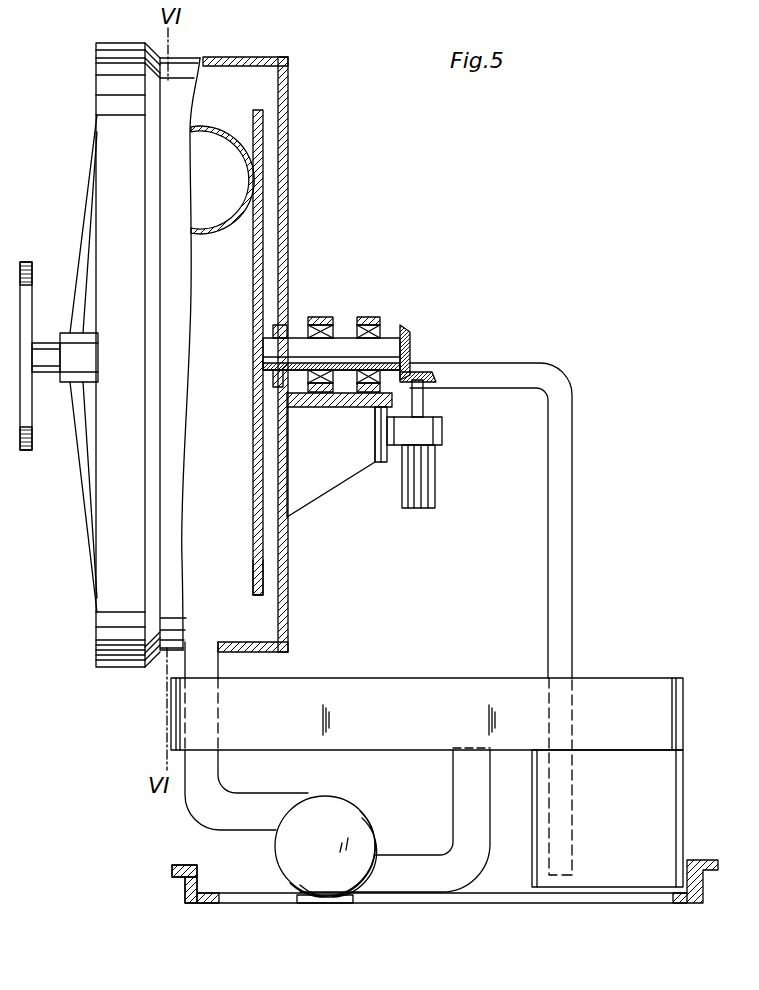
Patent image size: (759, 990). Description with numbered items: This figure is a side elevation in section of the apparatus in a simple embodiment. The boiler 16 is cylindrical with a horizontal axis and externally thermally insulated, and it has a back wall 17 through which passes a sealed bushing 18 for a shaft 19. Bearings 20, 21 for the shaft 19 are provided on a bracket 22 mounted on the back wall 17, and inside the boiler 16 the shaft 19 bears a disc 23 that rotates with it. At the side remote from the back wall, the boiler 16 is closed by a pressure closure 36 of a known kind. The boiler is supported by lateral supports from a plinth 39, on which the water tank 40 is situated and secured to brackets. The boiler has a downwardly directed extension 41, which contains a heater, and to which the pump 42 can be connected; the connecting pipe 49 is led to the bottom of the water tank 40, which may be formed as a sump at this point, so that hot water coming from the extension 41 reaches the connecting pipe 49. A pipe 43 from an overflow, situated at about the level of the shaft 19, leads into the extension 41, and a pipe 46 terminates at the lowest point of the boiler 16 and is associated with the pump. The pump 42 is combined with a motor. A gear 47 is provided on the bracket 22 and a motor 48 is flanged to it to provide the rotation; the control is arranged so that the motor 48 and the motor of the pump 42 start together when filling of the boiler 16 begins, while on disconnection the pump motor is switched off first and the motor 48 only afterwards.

The boiler 16 is at (257, 58).
The back wall 17 is at (289, 112).
The sealed bushing 18 is at (290, 335).
The shaft 19 is at (396, 338).
The bearing 20 is at (328, 316).
The bearing 21 is at (371, 316).
The bracket 22 is at (320, 407).
The disc 23 is at (256, 578).
The pressure closure 36 is at (105, 70).
The plinth 39 is at (537, 903).
The water tank 40 is at (683, 697).
The extension 41 is at (682, 798).
The pump 42 is at (298, 870).
The pipe 43 is at (573, 500).
The pipe 46 is at (185, 663).
The gear 47 is at (443, 431).
The motor 48 is at (433, 505).
The connecting pipe 49 is at (413, 878).